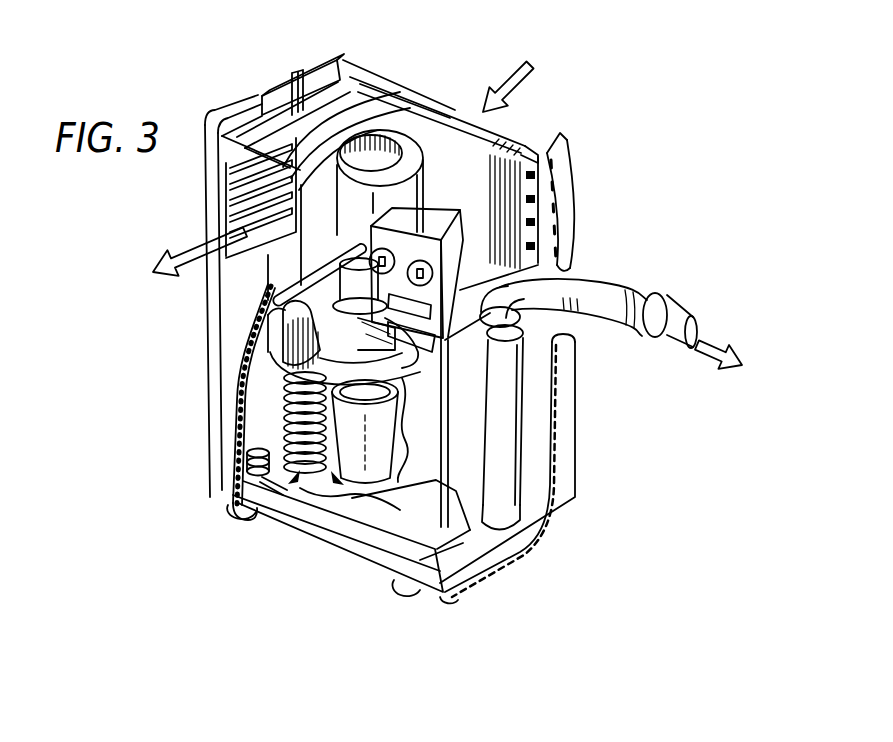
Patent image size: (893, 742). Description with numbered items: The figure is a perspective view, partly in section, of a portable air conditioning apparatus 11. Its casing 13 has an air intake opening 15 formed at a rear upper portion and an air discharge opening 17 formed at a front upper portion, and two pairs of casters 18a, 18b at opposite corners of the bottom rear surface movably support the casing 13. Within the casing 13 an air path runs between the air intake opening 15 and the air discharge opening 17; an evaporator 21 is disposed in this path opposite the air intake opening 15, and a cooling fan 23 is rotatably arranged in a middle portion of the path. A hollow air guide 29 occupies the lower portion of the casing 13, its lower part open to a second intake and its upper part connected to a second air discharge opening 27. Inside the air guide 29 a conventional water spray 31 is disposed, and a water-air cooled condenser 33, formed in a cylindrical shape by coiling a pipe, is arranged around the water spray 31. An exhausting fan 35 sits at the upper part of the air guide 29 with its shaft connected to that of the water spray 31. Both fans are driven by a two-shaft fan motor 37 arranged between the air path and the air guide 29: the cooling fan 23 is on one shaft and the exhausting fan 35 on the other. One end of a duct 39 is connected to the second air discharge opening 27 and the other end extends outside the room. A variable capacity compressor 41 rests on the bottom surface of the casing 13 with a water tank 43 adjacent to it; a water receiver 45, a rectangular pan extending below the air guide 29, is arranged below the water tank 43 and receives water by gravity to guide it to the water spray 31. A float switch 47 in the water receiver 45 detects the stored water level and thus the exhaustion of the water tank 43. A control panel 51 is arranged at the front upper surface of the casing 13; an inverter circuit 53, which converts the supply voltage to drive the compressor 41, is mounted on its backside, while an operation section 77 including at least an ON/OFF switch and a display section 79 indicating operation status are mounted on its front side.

The portable air conditioning apparatus 11 is at (195, 120).
The casing 13 is at (310, 63).
The air intake opening 15 is at (547, 147).
The air discharge opening 17 is at (247, 200).
The evaporator 21 is at (423, 123).
The cooling fan 23 is at (393, 123).
The inverter circuit 53 is at (427, 157).
The control panel 51 is at (425, 262).
The operation section 77 is at (378, 263).
The two-shaft fan motor 37 is at (353, 290).
The exhausting fan 35 is at (270, 336).
The water-air cooled condenser 33 is at (322, 470).
The water spray 31 is at (365, 468).
The air guide 29 is at (280, 403).
The float switch 47 is at (241, 478).
The caster 18a is at (257, 517).
The caster 18b is at (420, 590).
The water receiver 45 is at (440, 588).
The duct 39 is at (617, 297).
The second air discharge opening 27 is at (520, 298).
The display section 79 is at (395, 318).
The water tank 43 is at (480, 495).
The variable capacity compressor 41 is at (537, 507).